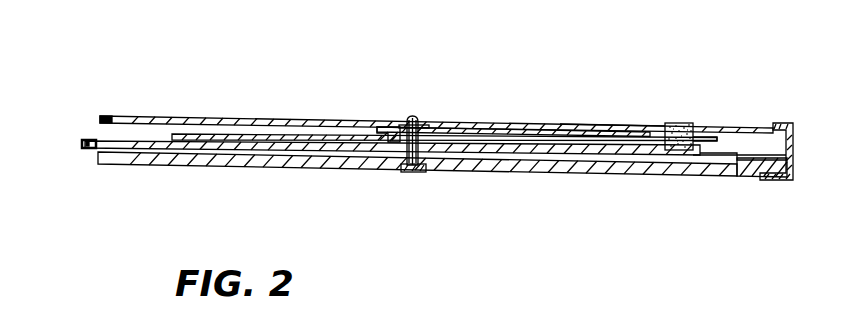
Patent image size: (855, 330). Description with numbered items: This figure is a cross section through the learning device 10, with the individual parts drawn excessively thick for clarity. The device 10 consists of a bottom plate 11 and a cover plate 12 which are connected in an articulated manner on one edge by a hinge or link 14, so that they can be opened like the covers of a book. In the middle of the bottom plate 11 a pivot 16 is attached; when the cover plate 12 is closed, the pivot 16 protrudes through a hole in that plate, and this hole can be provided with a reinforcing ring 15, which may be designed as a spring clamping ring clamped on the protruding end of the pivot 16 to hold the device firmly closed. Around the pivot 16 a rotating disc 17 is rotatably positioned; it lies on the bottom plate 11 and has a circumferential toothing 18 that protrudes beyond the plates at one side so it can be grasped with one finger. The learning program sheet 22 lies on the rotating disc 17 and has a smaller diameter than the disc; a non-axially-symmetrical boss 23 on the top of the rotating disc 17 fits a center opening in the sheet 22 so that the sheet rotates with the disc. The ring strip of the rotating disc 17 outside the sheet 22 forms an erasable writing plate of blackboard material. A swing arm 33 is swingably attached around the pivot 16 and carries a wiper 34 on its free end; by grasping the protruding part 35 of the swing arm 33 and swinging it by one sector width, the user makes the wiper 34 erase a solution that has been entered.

The device 10 is at (566, 102).
The bottom plate 11 is at (485, 163).
The cover plate 12 is at (535, 124).
The hinge 14 is at (793, 150).
The reinforcing ring 15 is at (424, 117).
The pivot 16 is at (407, 172).
The rotating disc 17 is at (158, 146).
The circumferential toothing 18 is at (92, 149).
The learning program sheet 22 is at (253, 117).
The non-axially-symmetrical boss 23 is at (385, 142).
The swing arm 33 is at (622, 125).
The wiper 34 is at (663, 156).
The protruding part 35 is at (690, 123).